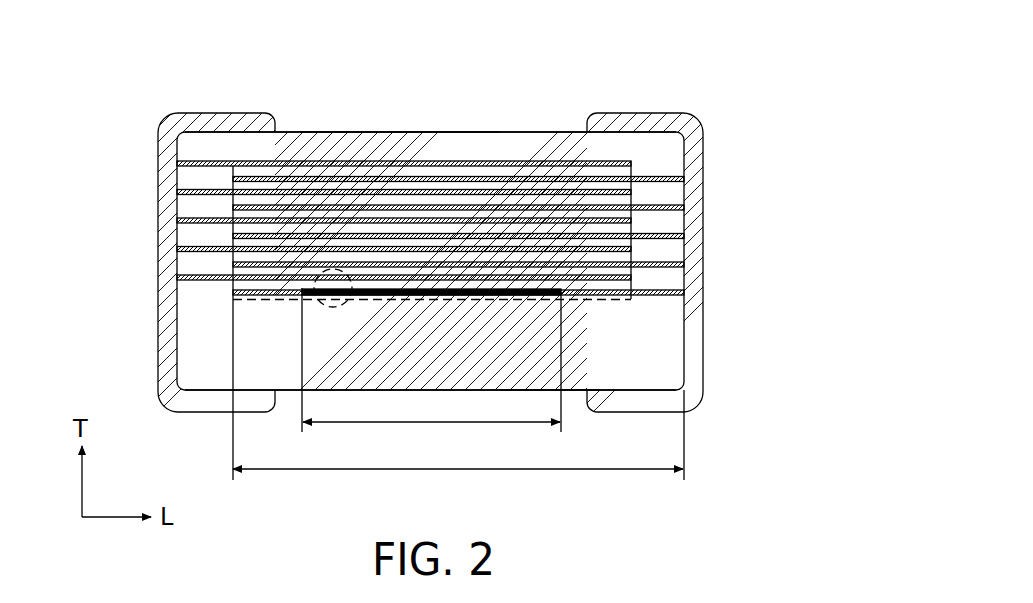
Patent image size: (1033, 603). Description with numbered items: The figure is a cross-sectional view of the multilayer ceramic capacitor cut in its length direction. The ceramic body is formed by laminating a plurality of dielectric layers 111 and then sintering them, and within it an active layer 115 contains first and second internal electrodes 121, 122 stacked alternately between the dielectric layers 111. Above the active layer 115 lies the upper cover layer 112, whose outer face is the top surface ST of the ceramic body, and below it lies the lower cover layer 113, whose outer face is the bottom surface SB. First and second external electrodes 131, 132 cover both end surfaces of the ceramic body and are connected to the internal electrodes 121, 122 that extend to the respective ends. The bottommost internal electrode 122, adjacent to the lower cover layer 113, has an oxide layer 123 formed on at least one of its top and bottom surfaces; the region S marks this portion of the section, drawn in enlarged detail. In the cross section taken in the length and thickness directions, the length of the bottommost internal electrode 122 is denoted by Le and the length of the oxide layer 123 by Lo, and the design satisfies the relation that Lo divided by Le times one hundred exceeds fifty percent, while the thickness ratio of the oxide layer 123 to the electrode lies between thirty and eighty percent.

The dielectric layer 111 is at (620, 242).
The upper cover layer 112 is at (456, 132).
The lower cover layer 113 is at (667, 353).
The active layer 115 is at (645, 216).
The first internal electrode 121 is at (207, 221).
The second internal electrode 122 is at (240, 235).
The oxide layer 123 is at (313, 297).
The first external electrode 131 is at (215, 122).
The second external electrode 132 is at (642, 122).
The enlarged region S is at (316, 292).
The top surface of the ceramic body ST is at (382, 132).
The bottom surface of the ceramic body SB is at (573, 392).
The length of the oxide layer Lo is at (431, 372).
The length of the bottommost internal electrode Le is at (458, 446).